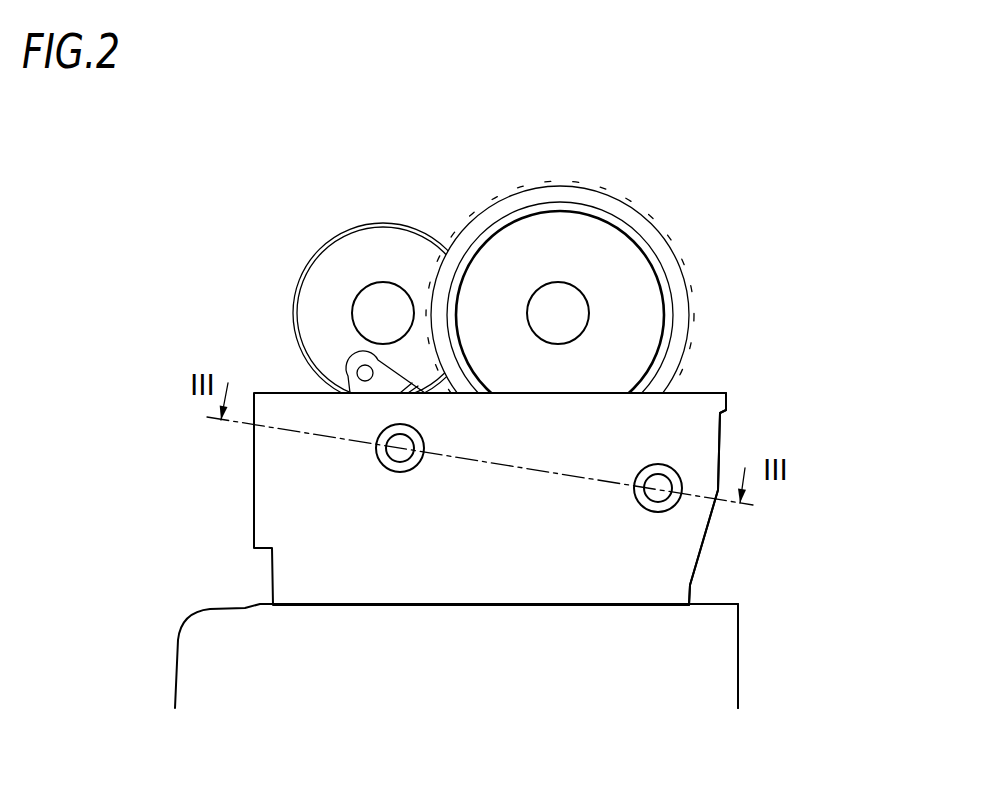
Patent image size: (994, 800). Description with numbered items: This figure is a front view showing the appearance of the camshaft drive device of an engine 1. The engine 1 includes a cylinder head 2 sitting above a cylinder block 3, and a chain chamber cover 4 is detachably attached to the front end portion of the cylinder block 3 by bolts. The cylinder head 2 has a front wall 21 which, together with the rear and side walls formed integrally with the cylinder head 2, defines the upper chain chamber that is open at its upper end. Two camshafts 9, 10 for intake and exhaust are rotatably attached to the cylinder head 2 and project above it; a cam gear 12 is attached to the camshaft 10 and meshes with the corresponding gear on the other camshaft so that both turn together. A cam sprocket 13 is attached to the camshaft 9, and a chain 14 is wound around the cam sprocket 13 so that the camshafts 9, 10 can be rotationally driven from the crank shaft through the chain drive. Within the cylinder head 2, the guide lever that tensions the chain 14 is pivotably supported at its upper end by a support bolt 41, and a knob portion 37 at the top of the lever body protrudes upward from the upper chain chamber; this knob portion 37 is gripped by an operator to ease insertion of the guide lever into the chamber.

The engine 1 is at (163, 293).
The cylinder head 2 is at (243, 512).
The cylinder block 3 is at (150, 682).
The chain chamber cover 4 is at (625, 680).
The camshaft 9 is at (568, 302).
The camshaft 10 is at (368, 324).
The cam gear 12 is at (305, 270).
The cam sprocket 13 is at (628, 333).
The chain 14 is at (652, 222).
The front wall 21 is at (597, 540).
The knob portion 37 is at (348, 370).
The support bolt 41 is at (388, 462).